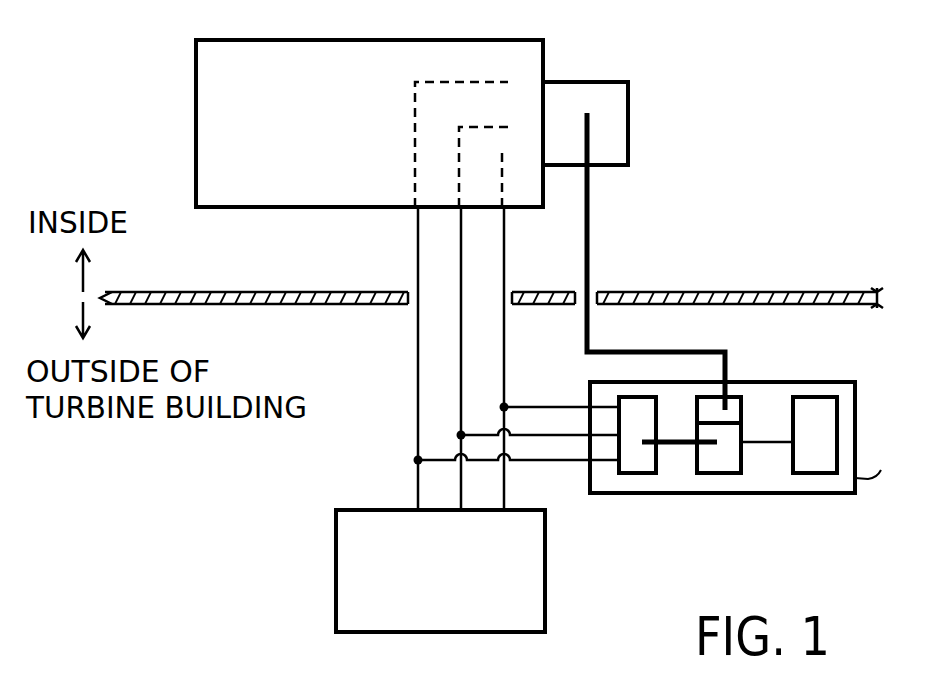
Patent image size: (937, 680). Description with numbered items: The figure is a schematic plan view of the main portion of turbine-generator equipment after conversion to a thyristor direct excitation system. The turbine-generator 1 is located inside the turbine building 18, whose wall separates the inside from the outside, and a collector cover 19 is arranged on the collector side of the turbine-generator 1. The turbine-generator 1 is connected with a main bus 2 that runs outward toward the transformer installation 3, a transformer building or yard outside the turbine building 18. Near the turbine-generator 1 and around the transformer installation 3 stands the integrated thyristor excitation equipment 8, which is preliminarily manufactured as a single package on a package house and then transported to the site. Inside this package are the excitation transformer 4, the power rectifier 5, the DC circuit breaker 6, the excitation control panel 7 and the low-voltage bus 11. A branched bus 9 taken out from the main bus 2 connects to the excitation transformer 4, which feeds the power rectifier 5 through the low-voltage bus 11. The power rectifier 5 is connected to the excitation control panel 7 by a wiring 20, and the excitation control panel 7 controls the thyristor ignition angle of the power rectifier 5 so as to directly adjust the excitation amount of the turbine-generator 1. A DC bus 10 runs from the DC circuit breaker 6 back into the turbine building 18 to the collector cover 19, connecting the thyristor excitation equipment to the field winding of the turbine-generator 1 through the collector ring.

The turbine-generator 1 is at (196, 94).
The main bus 2 is at (416, 353).
The transformer installation 3 is at (336, 568).
The excitation transformer 4 is at (645, 474).
The power rectifier 5 is at (720, 474).
The DC circuit breaker 6 is at (730, 404).
The excitation control panel 7 is at (837, 427).
The integrated thyristor excitation equipment 8 is at (800, 494).
The branched bus 9 is at (565, 462).
The DC bus 10 is at (590, 229).
The low-voltage bus 11 is at (683, 446).
The turbine building 18 is at (224, 292).
The collector cover 19 is at (605, 82).
The wiring 20 is at (775, 440).